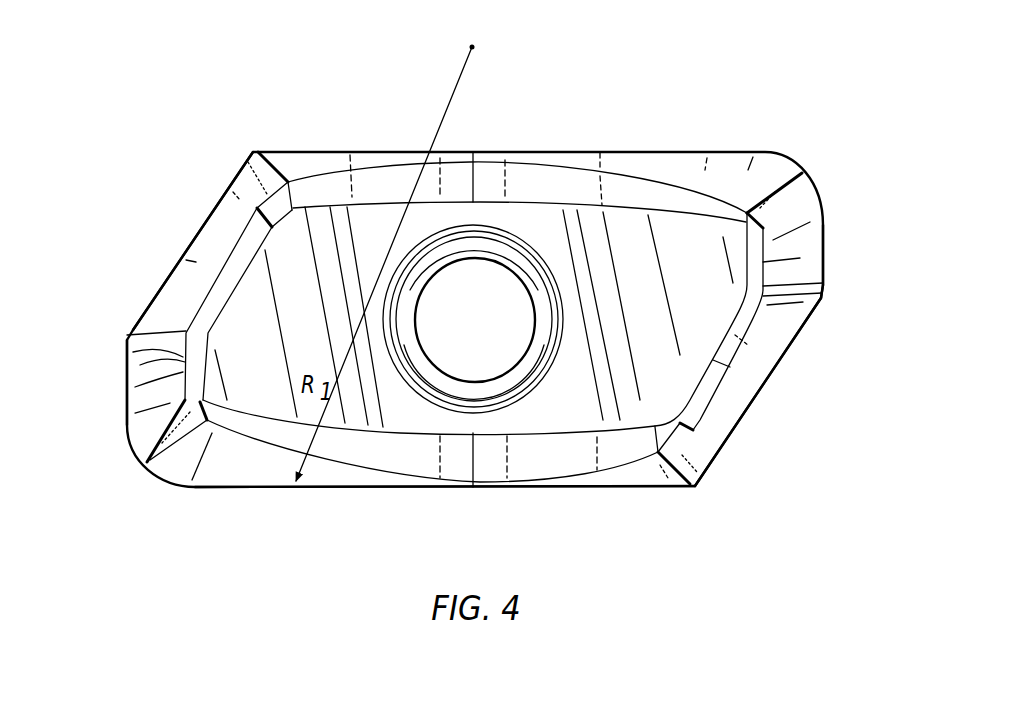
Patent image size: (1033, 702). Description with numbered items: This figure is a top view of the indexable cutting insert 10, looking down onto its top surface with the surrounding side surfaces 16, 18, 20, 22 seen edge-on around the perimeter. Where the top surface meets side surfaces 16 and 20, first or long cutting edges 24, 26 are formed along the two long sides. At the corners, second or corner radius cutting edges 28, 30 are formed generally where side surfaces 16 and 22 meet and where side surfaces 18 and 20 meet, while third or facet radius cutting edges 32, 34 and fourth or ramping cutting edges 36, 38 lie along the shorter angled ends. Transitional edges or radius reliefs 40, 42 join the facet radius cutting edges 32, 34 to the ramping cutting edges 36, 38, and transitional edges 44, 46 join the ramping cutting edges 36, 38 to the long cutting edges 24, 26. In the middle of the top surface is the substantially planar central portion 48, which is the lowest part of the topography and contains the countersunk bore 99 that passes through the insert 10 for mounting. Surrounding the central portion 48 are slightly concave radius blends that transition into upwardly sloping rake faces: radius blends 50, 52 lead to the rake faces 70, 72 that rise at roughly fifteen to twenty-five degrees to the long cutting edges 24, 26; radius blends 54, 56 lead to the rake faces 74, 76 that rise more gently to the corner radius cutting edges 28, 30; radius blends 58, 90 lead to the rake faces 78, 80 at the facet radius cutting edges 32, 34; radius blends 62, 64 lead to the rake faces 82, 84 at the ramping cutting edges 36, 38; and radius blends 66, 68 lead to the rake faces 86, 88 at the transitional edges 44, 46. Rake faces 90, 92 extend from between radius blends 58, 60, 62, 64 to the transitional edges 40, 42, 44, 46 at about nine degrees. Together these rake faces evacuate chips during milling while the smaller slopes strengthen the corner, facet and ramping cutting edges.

The indexable cutting insert 10 is at (842, 102).
The side surface 16 is at (427, 492).
The side surface 18 is at (808, 354).
The side surface 20 is at (569, 127).
The side surface 22 is at (136, 301).
The long cutting edge 24 is at (335, 488).
The long cutting edge 26 is at (465, 152).
The corner radius cutting edge 28 is at (147, 462).
The corner radius cutting edge 30 is at (806, 180).
The facet radius cutting edge 32 is at (127, 400).
The facet radius cutting edge 34 is at (823, 218).
The ramping cutting edge 36 is at (185, 245).
The ramping cutting edge 38 is at (733, 433).
The transitional edge 40 is at (127, 337).
The transitional edge 42 is at (823, 298).
The transitional edge 44 is at (252, 151).
The transitional edge 46 is at (697, 486).
The central portion 48 is at (378, 200).
The radius blend 50 is at (293, 447).
The radius blend 52 is at (343, 185).
The radius blend 54 is at (185, 410).
The radius blend 56 is at (713, 172).
The radius blend 58 is at (187, 370).
The radius blend 60 is at (760, 262).
The radius blend 62 is at (210, 297).
The radius blend 64 is at (718, 380).
The radius blend 66 is at (257, 192).
The radius blend 68 is at (670, 483).
The rake face 70 is at (223, 473).
The rake face 72 is at (310, 165).
The rake face 74 is at (163, 437).
The rake face 76 is at (768, 175).
The rake face 78 is at (153, 385).
The rake face 80 is at (807, 243).
The rake face 82 is at (213, 230).
The rake face 84 is at (767, 366).
The rake face 86 is at (250, 181).
The rake face 88 is at (693, 463).
The radius blend 90 is at (137, 340).
The rake face 92 is at (803, 293).
The countersunk bore 99 is at (463, 257).